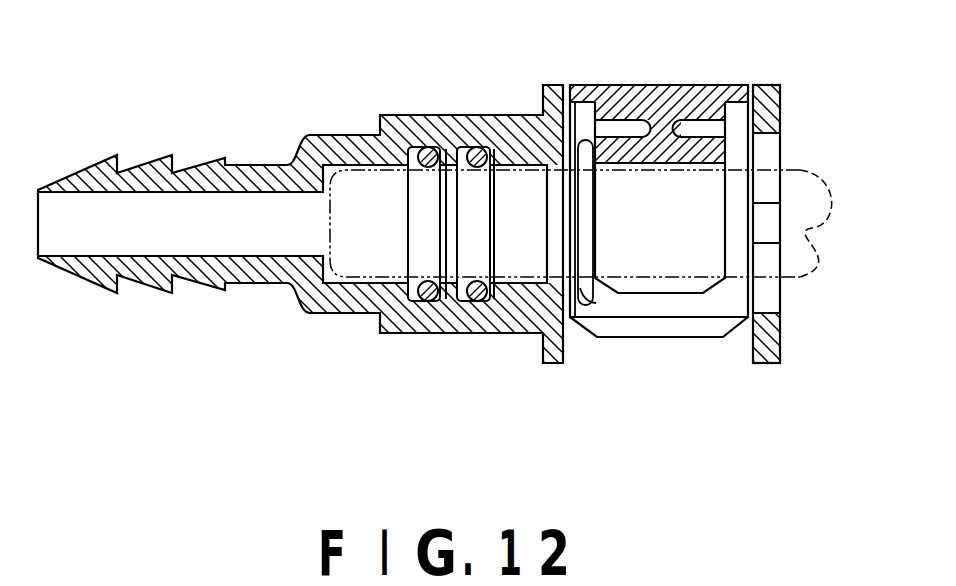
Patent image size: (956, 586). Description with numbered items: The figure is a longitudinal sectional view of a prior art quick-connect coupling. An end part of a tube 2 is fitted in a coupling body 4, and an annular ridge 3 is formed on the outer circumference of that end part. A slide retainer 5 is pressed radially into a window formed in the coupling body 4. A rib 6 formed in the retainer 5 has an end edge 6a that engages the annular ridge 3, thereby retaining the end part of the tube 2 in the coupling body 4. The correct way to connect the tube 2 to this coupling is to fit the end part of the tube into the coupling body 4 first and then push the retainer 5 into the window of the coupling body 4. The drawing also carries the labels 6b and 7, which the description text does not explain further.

The tube 2 is at (804, 168).
The annular ridge 3 is at (594, 287).
The coupling body 4 is at (457, 115).
The slide retainer 5 is at (662, 95).
The rib 6 is at (666, 157).
The end edge 6a is at (591, 138).
The retainer flange 6b is at (728, 112).
The O-ring seals 7 is at (480, 300).